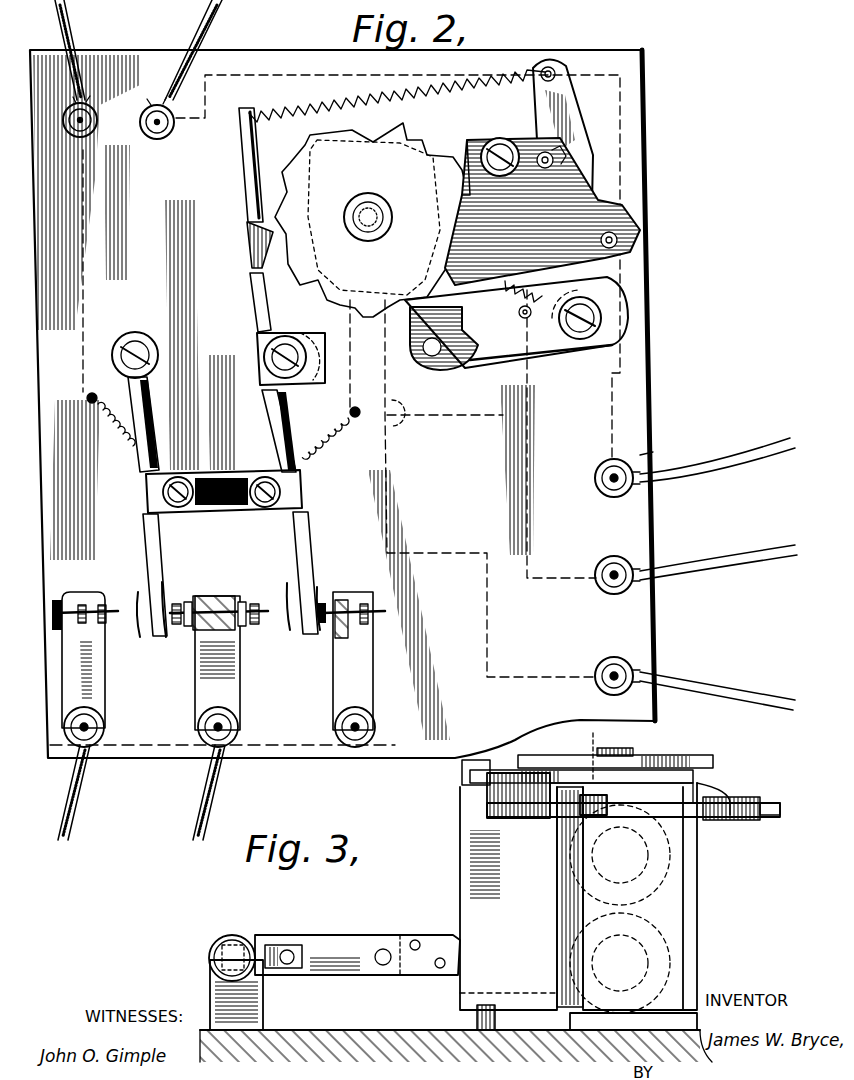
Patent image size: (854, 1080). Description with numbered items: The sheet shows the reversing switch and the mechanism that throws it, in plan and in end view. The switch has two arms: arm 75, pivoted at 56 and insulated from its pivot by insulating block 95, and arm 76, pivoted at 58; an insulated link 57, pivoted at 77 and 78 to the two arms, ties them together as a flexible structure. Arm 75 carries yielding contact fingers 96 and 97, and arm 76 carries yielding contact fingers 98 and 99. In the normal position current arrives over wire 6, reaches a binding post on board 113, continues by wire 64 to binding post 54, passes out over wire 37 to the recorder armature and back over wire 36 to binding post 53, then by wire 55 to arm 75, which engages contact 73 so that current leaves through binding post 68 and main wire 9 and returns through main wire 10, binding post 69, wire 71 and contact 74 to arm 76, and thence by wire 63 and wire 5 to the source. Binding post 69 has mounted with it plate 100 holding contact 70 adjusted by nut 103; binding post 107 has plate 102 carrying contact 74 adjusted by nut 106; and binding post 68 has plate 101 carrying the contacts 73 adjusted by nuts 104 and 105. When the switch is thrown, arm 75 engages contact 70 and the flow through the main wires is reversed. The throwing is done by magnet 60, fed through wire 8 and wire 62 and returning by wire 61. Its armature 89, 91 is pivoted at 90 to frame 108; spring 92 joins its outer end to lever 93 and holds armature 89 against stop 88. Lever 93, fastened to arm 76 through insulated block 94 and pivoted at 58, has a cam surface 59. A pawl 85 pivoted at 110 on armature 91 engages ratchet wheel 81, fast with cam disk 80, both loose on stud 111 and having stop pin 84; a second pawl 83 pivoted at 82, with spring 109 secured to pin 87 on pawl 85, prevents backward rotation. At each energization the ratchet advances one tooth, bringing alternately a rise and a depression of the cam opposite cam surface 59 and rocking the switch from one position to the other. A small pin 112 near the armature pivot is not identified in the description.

In FIG. 2, the wire 5 is at (722, 565).
In FIG. 2, the wire 6 is at (735, 465).
In FIG. 2, the wire 8 is at (720, 665).
In FIG. 2, the main wire 9 is at (205, 808).
In FIG. 2, the main wire 10 is at (70, 808).
In FIG. 2, the wire 36 is at (78, 30).
In FIG. 2, the wire 37 is at (195, 35).
In FIG. 2, the binding post 53 is at (80, 125).
In FIG. 2, the binding post 54 is at (157, 140).
In FIG. 2, the wire 55 is at (85, 295).
In FIG. 2, the pivot 56 is at (133, 350).
In FIG. 2, the insulated link 57 is at (190, 478).
In FIG. 2, the pivot 58 is at (278, 352).
In FIG. 3, the pivot 58 is at (458, 775).
In FIG. 2, the cam surface 59 is at (252, 230).
In FIG. 3, the cam surface 59 is at (601, 752).
In FIG. 3, the magnet 60 is at (655, 930).
In FIG. 2, the wire 61 is at (362, 380).
In FIG. 2, the wire 62 is at (400, 385).
In FIG. 2, the wire 63 is at (527, 553).
In FIG. 2, the wire 64 is at (612, 398).
In FIG. 2, the binding post 68 is at (228, 737).
In FIG. 2, the binding post 69 is at (98, 735).
In FIG. 2, the contact 70 is at (110, 615).
In FIG. 2, the wire 71 is at (275, 745).
In FIG. 2, the contact pin 73 is at (180, 625).
In FIG. 2, the contact 74 is at (325, 625).
In FIG. 3, the contact 74 is at (220, 958).
In FIG. 2, the arm 75 is at (145, 540).
In FIG. 2, the arm 76 is at (307, 530).
In FIG. 3, the arm 76 is at (370, 965).
In FIG. 2, the pivot 77 is at (178, 505).
In FIG. 2, the pivot 78 is at (262, 505).
In FIG. 2, the cam disk 80 is at (410, 145).
In FIG. 3, the cam disk 80 is at (700, 760).
In FIG. 2, the ratchet wheel 81 is at (470, 140).
In FIG. 3, the ratchet wheel 81 is at (575, 768).
In FIG. 2, the pivot 82 is at (503, 155).
In FIG. 2, the pawl 83 is at (470, 200).
In FIG. 2, the stop pin 84 is at (452, 370).
In FIG. 2, the pawl 85 is at (535, 352).
In FIG. 2, the pin 87 is at (520, 318).
In FIG. 2, the stop 88 is at (617, 243).
In FIG. 3, the stop 88 is at (600, 815).
In FIG. 2, the armature 89 is at (625, 255).
In FIG. 3, the armature 89 is at (570, 880).
In FIG. 2, the pivot 90 is at (566, 156).
In FIG. 2, the armature 91 is at (575, 105).
In FIG. 3, the armature 91 is at (670, 813).
In FIG. 2, the spring 92 is at (345, 100).
In FIG. 3, the spring 92 is at (740, 797).
In FIG. 2, the lever 93 is at (240, 148).
In FIG. 3, the lever 93 is at (700, 800).
In FIG. 2, the insulated block 94 is at (270, 450).
In FIG. 2, the insulating block 95 is at (145, 445).
In FIG. 2, the yielding contact finger 96 is at (165, 598).
In FIG. 2, the yielding contact finger 97 is at (138, 600).
In FIG. 2, the yielding contact finger 98 is at (318, 598).
In FIG. 3, the yielding contact finger 98 is at (280, 945).
In FIG. 2, the yielding contact finger 99 is at (288, 598).
In FIG. 2, the plate 100 is at (115, 688).
In FIG. 2, the plate 101 is at (235, 690).
In FIG. 2, the plate 102 is at (370, 680).
In FIG. 3, the plate 102 is at (258, 1008).
In FIG. 2, the nut 103 is at (85, 640).
In FIG. 2, the nut 104 is at (205, 640).
In FIG. 2, the nut 105 is at (215, 596).
In FIG. 2, the nut 106 is at (365, 625).
In FIG. 2, the binding post 107 is at (365, 740).
In FIG. 2, the frame 108 is at (600, 215).
In FIG. 3, the frame 108 is at (460, 930).
In FIG. 2, the spring 109 is at (538, 289).
In FIG. 2, the pivot 110 is at (592, 320).
In FIG. 3, the pivot 110 is at (515, 815).
In FIG. 2, the stud 111 is at (368, 220).
In FIG. 3, the stud 111 is at (625, 748).
In FIG. 2, the pin 112 is at (553, 156).
In FIG. 2, the board 113 is at (640, 445).
In FIG. 3, the board 113 is at (395, 1040).